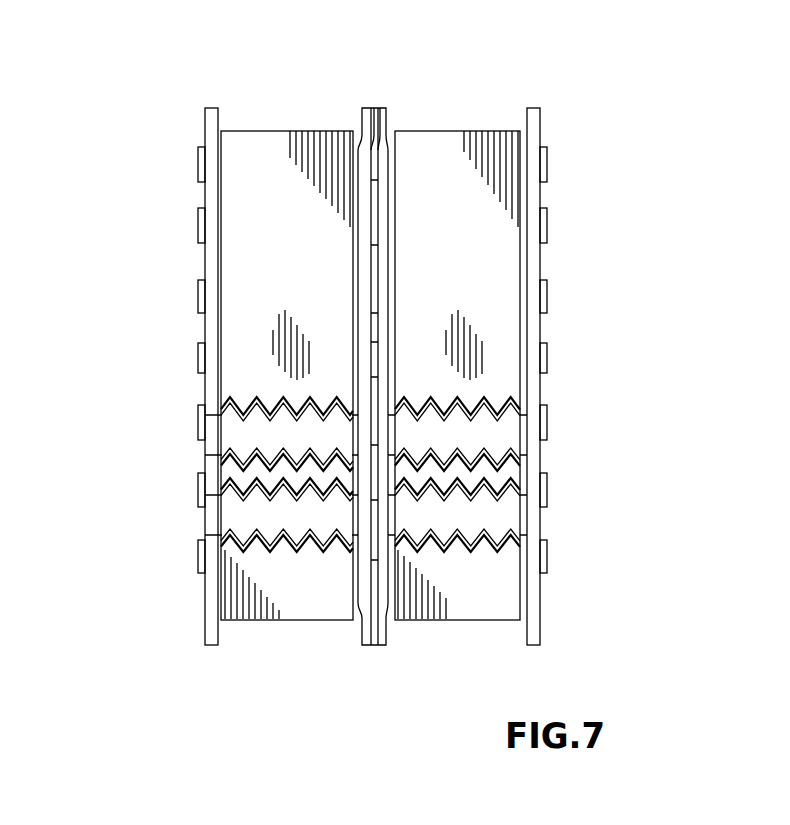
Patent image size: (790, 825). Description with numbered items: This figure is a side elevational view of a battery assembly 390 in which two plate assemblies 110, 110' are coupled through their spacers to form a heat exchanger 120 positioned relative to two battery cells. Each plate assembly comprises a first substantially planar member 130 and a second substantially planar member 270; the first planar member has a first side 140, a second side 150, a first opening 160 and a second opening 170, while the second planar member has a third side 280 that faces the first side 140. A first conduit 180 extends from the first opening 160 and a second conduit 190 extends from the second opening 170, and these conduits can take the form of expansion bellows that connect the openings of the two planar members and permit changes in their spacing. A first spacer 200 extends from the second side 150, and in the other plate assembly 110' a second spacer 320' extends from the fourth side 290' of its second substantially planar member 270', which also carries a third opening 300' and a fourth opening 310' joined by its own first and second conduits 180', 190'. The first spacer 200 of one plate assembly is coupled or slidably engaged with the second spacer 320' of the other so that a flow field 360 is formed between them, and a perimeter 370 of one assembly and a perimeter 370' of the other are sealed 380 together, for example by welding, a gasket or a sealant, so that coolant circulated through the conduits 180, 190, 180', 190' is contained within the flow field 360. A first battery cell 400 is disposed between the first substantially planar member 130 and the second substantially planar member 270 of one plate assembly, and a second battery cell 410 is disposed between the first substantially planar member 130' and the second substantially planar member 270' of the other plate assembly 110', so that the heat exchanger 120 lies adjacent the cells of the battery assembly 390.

The plate assembly 110 is at (214, 291).
The plate assembly 110' is at (558, 288).
The heat exchanger 120 is at (489, 63).
The first substantially planar member 130 is at (171, 371).
The first substantially planar member 130' is at (395, 371).
The first side 140 is at (218, 147).
The second side 150 is at (205, 196).
The first opening 160 is at (204, 385).
The second opening 170 is at (203, 518).
The first conduit 180 is at (287, 389).
The first conduit 180' is at (457, 389).
The second conduit 190 is at (287, 562).
The second conduit 190' is at (457, 563).
The first spacer 200 is at (198, 357).
The second substantially planar member 270 is at (339, 397).
The second substantially planar member 270' is at (505, 536).
The third side 280 is at (528, 112).
The fourth side 290' is at (579, 195).
The third opening 300' is at (585, 436).
The fourth opening 310' is at (585, 523).
The second spacer 320' is at (588, 326).
The flow field 360 is at (378, 160).
The perimeter 370 is at (317, 366).
The perimeter 370' is at (422, 100).
The seal 380 is at (374, 108).
The battery assembly 390 is at (266, 38).
The first battery cell 400 is at (285, 621).
The second battery cell 410 is at (455, 621).